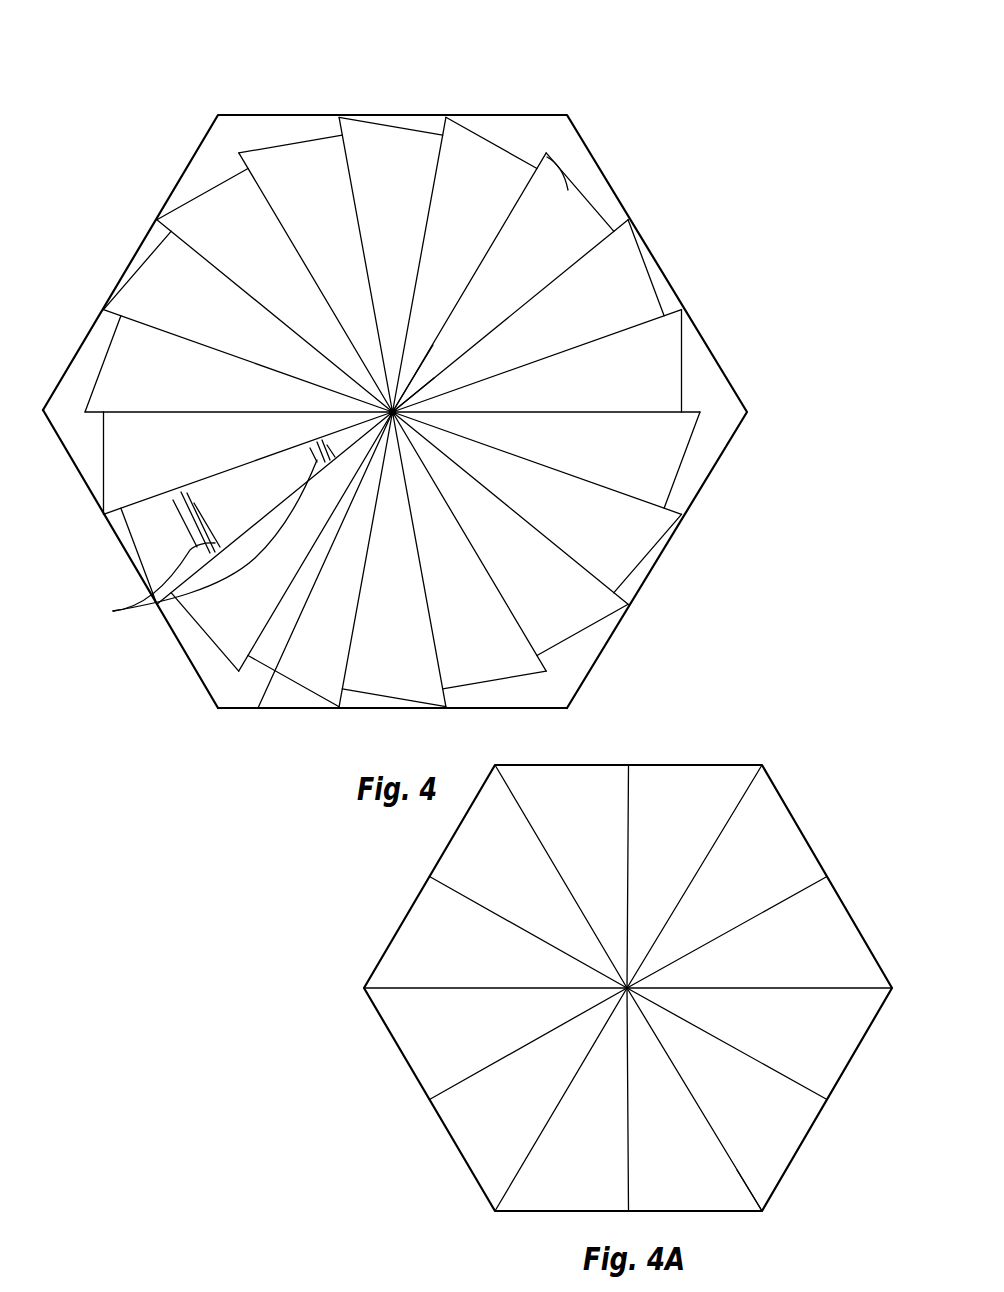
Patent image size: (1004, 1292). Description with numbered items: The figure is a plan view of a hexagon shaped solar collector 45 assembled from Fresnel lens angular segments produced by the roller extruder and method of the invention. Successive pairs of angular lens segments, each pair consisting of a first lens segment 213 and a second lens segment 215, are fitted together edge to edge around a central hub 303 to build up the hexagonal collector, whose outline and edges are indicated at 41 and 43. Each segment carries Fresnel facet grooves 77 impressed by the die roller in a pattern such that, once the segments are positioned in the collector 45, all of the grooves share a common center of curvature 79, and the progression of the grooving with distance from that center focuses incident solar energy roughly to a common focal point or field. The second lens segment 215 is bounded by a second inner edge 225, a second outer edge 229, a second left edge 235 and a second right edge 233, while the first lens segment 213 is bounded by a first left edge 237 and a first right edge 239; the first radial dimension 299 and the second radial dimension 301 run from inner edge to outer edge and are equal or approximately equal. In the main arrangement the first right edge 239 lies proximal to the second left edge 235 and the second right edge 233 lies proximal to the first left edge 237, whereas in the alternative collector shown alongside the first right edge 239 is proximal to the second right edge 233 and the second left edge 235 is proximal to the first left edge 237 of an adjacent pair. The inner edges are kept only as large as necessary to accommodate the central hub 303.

In FIG. 4, the hexagonal frame 41 is at (102, 371).
In FIG. 4, the bottom edge of frame 43 is at (290, 710).
In FIG. 4, the solar collector 45 is at (198, 666).
In FIG. 4, the Fresnel facet grooves 77 is at (118, 611).
In FIG. 4, the common center of curvature 79 is at (356, 410).
In FIG. 4, the first lens segment 213 is at (167, 470).
In FIG. 4A, the first lens segment 213 is at (568, 787).
In FIG. 4, the second lens segment 215 is at (157, 547).
In FIG. 4A, the second lens segment 215 is at (689, 789).
In FIG. 4, the second inner edge 225 is at (592, 209).
In FIG. 4, the second outer edge 229 is at (568, 190).
In FIG. 4, the second right edge 233 is at (552, 282).
In FIG. 4, the second left edge 235 is at (507, 233).
In FIG. 4A, the second left edge 235 is at (702, 1108).
In FIG. 4, the first left edge 237 is at (433, 345).
In FIG. 4A, the first left edge 237 is at (737, 1170).
In FIG. 4, the first right edge 239 is at (433, 383).
In FIG. 4A, the first right edge 239 is at (745, 919).
In FIG. 4, the first radial dimension 299 is at (327, 300).
In FIG. 4, the second radial dimension 301 is at (273, 203).
In FIG. 4, the central hub 303 is at (258, 708).